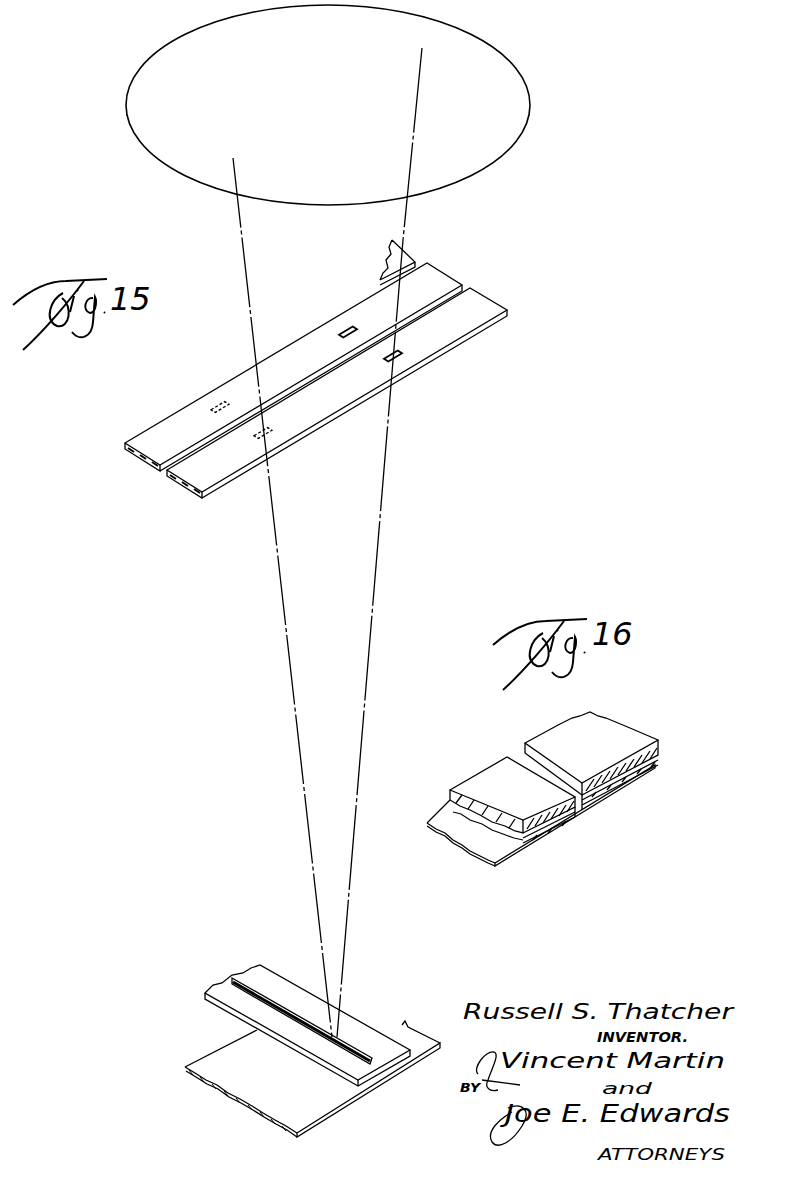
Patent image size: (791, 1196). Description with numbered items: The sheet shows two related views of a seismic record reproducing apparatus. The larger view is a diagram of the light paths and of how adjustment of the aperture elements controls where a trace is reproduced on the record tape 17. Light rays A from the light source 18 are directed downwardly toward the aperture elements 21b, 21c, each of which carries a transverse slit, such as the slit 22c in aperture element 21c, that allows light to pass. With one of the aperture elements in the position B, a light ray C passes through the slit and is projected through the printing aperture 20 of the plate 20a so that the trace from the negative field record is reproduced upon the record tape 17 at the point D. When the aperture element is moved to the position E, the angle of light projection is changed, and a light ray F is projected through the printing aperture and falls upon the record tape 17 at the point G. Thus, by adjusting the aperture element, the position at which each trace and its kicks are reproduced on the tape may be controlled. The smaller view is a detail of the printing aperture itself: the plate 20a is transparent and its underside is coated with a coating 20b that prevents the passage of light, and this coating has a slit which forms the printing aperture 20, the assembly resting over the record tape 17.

In FIG. 15, the record tape 17 is at (206, 1062).
In FIG. 16, the record tape 17 is at (492, 845).
In FIG. 15, the light source 18 is at (523, 130).
In FIG. 15, the printing aperture 20 is at (278, 1000).
In FIG. 16, the printing aperture 20 is at (580, 807).
In FIG. 15, the plate 20a is at (377, 1027).
In FIG. 16, the plate 20a is at (608, 740).
In FIG. 16, the coating 20b is at (647, 767).
In FIG. 15, the aperture element 21b is at (447, 272).
In FIG. 15, the aperture element 21c is at (493, 302).
In FIG. 15, the slit 22c is at (407, 355).
In FIG. 15, the light rays A is at (333, 130).
In FIG. 15, the position B is at (400, 357).
In FIG. 15, the light ray C is at (369, 632).
In FIG. 15, the point D is at (332, 1078).
In FIG. 15, the position E is at (272, 430).
In FIG. 15, the light ray F is at (289, 675).
In FIG. 15, the point G is at (338, 1080).